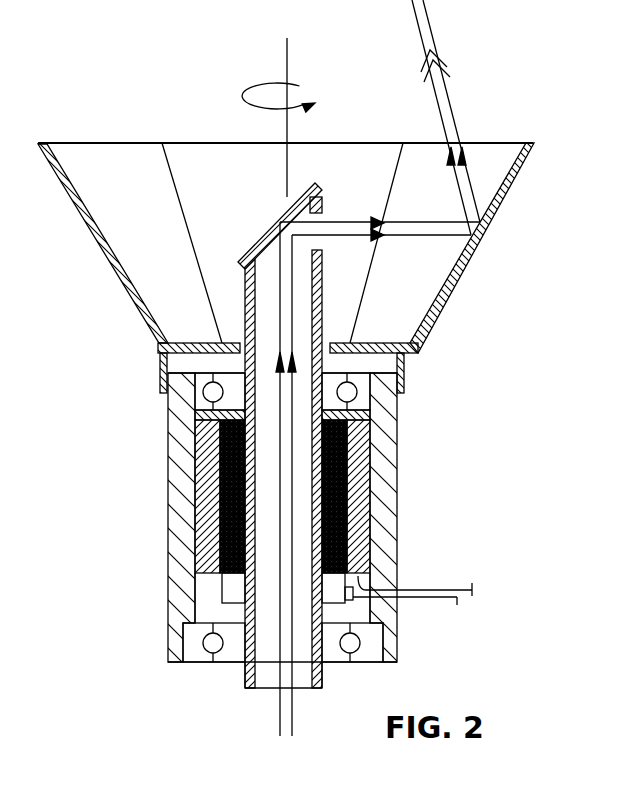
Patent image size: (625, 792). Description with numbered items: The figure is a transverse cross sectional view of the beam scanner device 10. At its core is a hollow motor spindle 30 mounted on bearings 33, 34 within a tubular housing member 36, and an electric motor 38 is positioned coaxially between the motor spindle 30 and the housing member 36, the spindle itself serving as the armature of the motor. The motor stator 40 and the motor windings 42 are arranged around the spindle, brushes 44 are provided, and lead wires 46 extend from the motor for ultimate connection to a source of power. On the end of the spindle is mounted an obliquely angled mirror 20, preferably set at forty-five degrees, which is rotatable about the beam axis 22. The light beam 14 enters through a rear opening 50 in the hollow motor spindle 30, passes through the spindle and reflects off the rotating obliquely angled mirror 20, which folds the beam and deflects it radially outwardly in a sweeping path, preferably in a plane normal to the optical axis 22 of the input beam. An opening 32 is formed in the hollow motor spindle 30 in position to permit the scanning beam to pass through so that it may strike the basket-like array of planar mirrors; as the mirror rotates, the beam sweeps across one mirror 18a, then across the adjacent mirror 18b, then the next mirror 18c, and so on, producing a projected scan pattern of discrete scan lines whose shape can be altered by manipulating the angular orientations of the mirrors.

The beam scanner device 10 is at (122, 501).
The beam 14 is at (447, 104).
The mirror 18a is at (133, 158).
The mirror 18b is at (220, 158).
The mirror 18c is at (500, 157).
The obliquely angled mirror 20 is at (318, 196).
The beam axis 22 is at (288, 64).
The hollow motor spindle 30 is at (322, 285).
The opening 32 is at (338, 244).
The bearing 33 is at (208, 396).
The bearing 34 is at (213, 653).
The tubular housing member 36 is at (397, 485).
The electric motor 38 is at (186, 530).
The motor stator 40 is at (360, 437).
The motor windings 42 is at (197, 453).
The brushes 44 is at (353, 602).
The lead wires 46 is at (437, 583).
The rear opening 50 is at (262, 700).